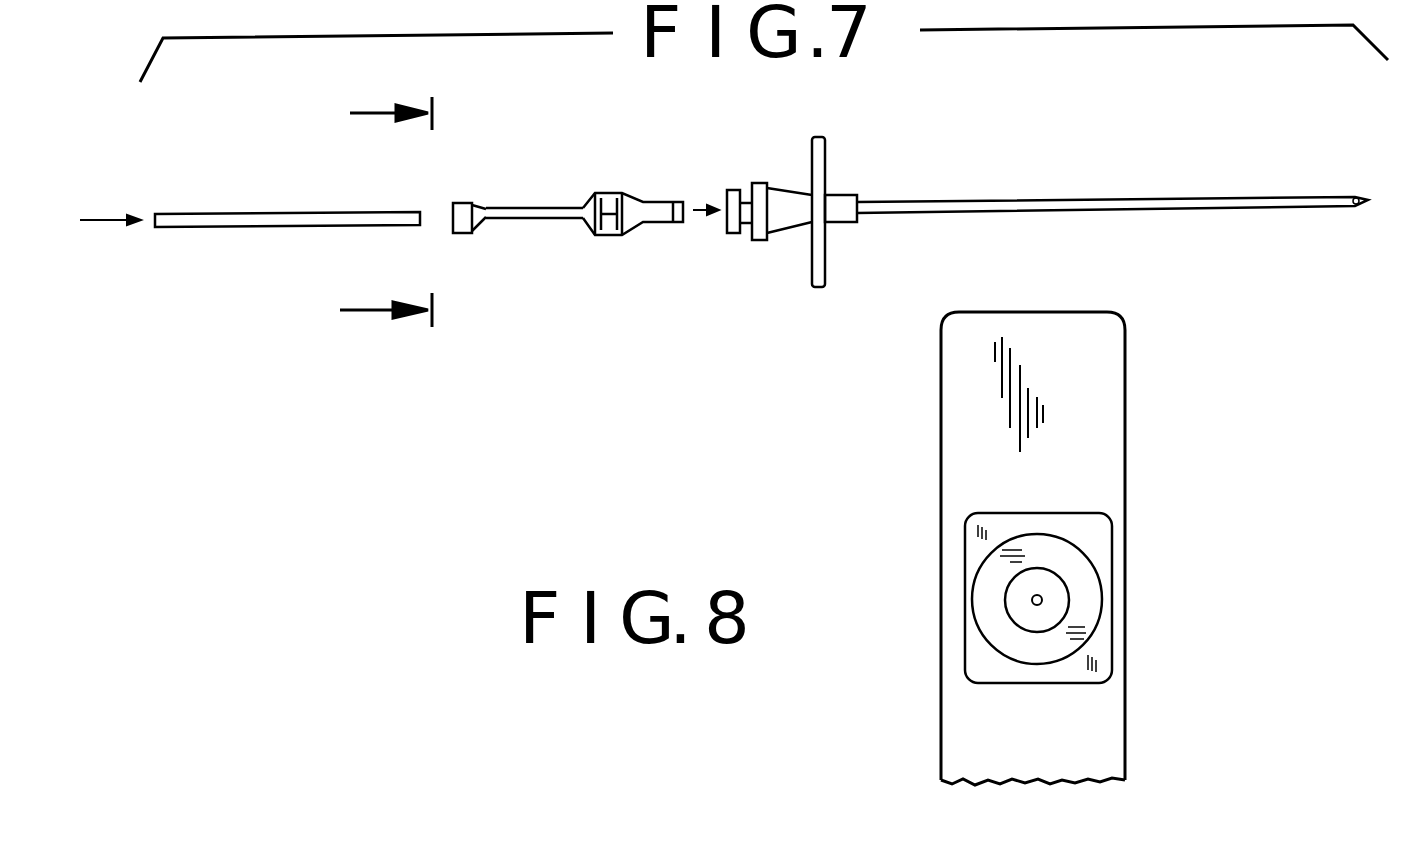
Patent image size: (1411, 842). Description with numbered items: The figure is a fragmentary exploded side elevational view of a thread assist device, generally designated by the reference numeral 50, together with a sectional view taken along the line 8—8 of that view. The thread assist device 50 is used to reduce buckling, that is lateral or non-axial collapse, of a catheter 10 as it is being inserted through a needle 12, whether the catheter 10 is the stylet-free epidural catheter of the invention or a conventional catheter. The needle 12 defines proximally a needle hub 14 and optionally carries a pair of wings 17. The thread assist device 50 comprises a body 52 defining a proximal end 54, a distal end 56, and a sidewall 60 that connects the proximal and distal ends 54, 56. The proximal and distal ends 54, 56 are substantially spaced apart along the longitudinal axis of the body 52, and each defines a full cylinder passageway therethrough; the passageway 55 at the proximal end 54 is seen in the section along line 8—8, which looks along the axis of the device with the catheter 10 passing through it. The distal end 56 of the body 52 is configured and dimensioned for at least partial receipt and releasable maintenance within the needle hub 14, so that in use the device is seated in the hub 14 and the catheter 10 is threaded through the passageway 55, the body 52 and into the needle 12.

In FIG. 7, the section line 8- 8 is at (337, 212).
In FIG. 7, the catheter 10 is at (216, 232).
In FIG. 8, the catheter 10 is at (1090, 598).
In FIG. 7, the needle 12 is at (1109, 188).
In FIG. 7, the needle hub 14 is at (742, 192).
In FIG. 7, the wings 17 is at (825, 150).
In FIG. 8, the wings 17 is at (1108, 380).
In FIG. 7, the thread assist device 50 is at (641, 164).
In FIG. 8, the thread assist device 50 is at (1098, 538).
In FIG. 7, the body 52 is at (544, 200).
In FIG. 7, the proximal end 54 is at (473, 233).
In FIG. 8, the proximal end 54 is at (990, 567).
In FIG. 8, the full cylinder passageway 55 is at (1007, 620).
In FIG. 7, the distal end 56 is at (637, 223).
In FIG. 7, the sidewall 60 is at (557, 220).